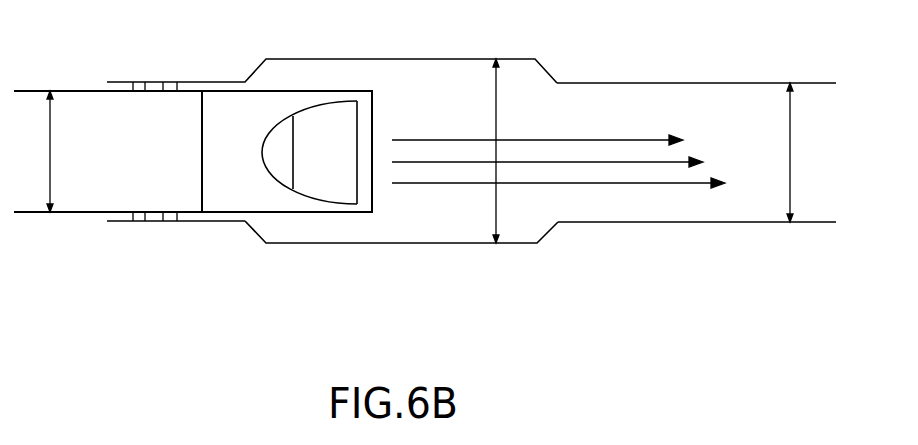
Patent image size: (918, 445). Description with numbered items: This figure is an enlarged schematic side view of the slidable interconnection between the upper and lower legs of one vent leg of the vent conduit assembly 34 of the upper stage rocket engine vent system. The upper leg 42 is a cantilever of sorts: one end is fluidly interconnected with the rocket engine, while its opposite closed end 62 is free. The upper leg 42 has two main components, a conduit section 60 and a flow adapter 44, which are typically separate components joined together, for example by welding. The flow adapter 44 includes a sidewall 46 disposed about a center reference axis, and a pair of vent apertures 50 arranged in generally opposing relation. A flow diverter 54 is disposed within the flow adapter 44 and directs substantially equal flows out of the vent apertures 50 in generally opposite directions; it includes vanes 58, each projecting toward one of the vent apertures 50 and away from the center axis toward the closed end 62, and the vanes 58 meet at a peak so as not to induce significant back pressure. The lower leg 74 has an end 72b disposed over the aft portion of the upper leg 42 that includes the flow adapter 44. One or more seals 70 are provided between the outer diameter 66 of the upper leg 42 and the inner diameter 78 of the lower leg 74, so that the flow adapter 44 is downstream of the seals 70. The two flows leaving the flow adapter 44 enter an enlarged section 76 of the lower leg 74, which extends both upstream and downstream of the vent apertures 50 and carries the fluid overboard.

The vent conduit assembly 34 is at (652, 47).
The upper leg 42 is at (40, 91).
The flow adapter 44 is at (284, 91).
The sidewall 46 is at (215, 152).
The vent aperture 50 is at (266, 130).
The flow diverter 54 is at (290, 168).
The vane 58 is at (337, 113).
The conduit section 60 is at (86, 91).
The closed end 62 is at (372, 123).
The outer diameter 66 is at (50, 143).
The seal 70 is at (150, 90).
The end of lower leg 72b is at (105, 222).
The lower leg 74 is at (595, 222).
The enlarged section 76 is at (297, 244).
The inner diameter 78 is at (497, 98).